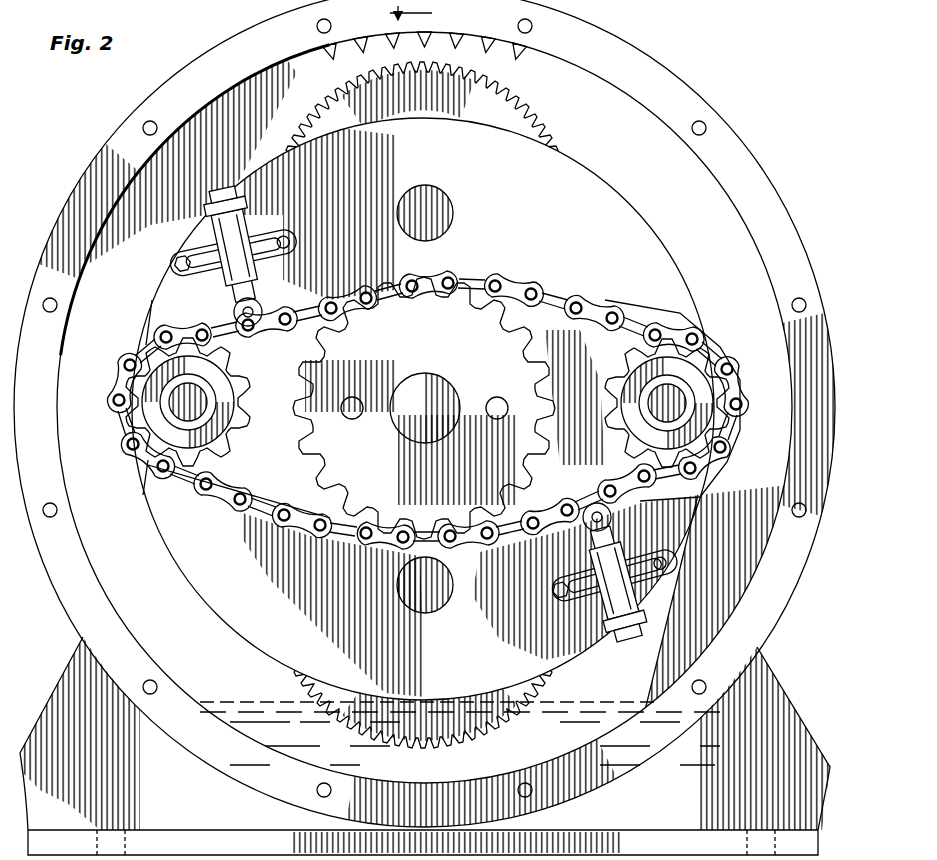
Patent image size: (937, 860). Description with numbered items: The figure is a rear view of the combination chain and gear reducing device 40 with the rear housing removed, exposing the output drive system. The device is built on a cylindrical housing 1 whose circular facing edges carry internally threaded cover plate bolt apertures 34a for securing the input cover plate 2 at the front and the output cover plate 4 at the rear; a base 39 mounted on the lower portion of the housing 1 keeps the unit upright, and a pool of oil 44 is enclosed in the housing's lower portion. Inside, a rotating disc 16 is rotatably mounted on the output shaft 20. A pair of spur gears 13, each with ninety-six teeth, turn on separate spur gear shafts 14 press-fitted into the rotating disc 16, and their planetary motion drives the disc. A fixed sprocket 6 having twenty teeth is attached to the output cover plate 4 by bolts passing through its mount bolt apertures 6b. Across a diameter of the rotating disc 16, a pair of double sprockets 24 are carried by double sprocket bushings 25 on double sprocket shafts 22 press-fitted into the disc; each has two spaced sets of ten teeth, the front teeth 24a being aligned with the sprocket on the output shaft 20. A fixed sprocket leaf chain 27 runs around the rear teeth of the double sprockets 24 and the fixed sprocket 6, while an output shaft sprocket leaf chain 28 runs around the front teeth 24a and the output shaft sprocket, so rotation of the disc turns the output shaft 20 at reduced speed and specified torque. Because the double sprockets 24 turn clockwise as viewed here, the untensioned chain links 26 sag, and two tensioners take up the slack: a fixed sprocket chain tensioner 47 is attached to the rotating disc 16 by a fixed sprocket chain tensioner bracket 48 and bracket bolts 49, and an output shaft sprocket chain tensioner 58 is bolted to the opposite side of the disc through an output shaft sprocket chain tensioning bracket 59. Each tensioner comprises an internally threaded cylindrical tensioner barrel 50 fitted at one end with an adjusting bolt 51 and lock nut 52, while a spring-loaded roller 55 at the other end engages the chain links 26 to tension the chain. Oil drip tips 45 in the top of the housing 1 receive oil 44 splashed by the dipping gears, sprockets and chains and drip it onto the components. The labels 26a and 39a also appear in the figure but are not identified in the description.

The cylindrical housing 1 is at (668, 63).
The input cover plate 2 is at (272, 112).
The output cover plate 4 is at (402, 14).
The fixed sprocket 6 is at (362, 496).
The mount bolt apertures 6b is at (353, 397).
The spur gears 13 is at (530, 76).
The spur gear shaft 14 is at (446, 212).
The rotating disc 16 is at (592, 190).
The output shaft 20 is at (440, 409).
The double sprocket shafts 22 is at (427, 402).
The double sprockets 24 is at (242, 383).
The front teeth 24a is at (131, 362).
The double sprocket bushings 25 is at (262, 392).
The chain links 26 is at (120, 441).
The chain link 26a is at (206, 490).
The fixed sprocket leaf chain 27 is at (256, 512).
The output shaft sprocket leaf chain 28 is at (522, 286).
The cover plate bolt apertures 34a is at (182, 106).
The base 39 is at (50, 690).
The base bolt lines 39a is at (750, 830).
The combination chain and gear reducing device 40 is at (600, 22).
The oil 44 is at (564, 742).
The oil drip tips 45 is at (376, 44).
The fixed sprocket chain tensioner 47 is at (650, 606).
The fixed sprocket chain tensioner bracket 48 is at (575, 567).
The bracket bolts 49 is at (280, 243).
The tensioner barrel 50 is at (280, 258).
The adjusting bolt 51 is at (222, 190).
The lock nut 52 is at (212, 206).
The roller 55 is at (262, 306).
The output shaft sprocket chain tensioner 58 is at (212, 232).
The output shaft sprocket chain tensioning bracket 59 is at (228, 281).